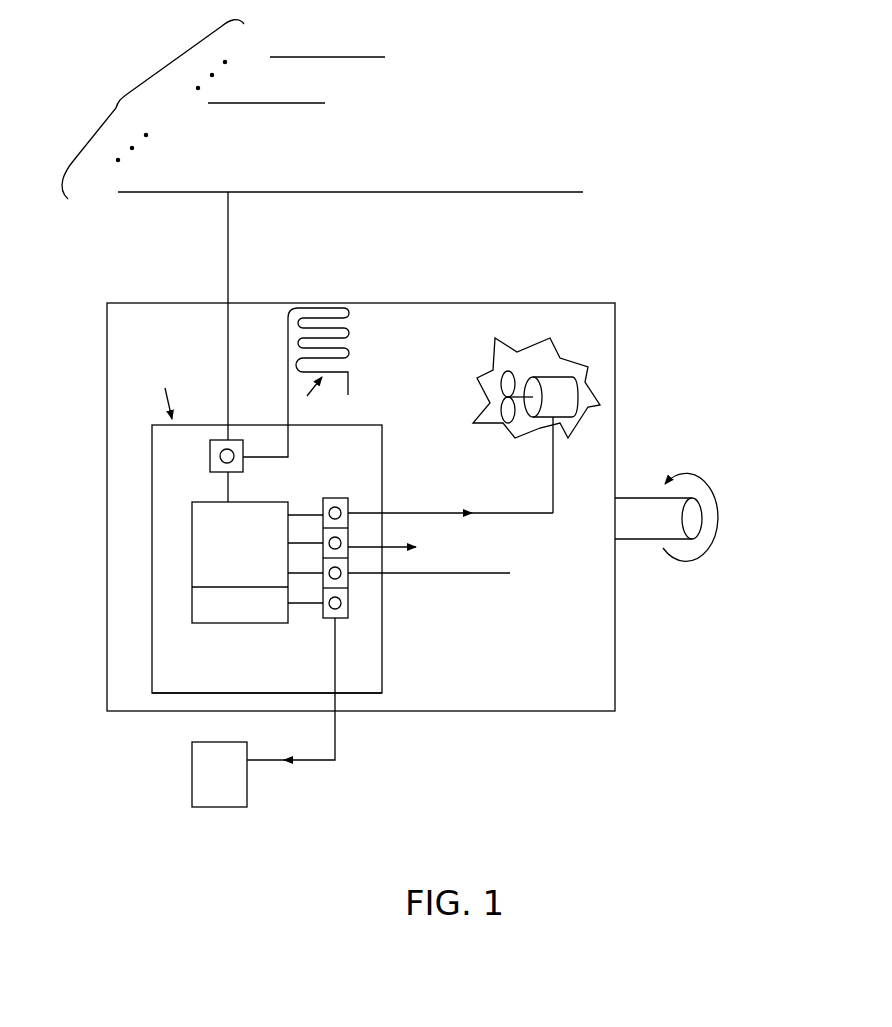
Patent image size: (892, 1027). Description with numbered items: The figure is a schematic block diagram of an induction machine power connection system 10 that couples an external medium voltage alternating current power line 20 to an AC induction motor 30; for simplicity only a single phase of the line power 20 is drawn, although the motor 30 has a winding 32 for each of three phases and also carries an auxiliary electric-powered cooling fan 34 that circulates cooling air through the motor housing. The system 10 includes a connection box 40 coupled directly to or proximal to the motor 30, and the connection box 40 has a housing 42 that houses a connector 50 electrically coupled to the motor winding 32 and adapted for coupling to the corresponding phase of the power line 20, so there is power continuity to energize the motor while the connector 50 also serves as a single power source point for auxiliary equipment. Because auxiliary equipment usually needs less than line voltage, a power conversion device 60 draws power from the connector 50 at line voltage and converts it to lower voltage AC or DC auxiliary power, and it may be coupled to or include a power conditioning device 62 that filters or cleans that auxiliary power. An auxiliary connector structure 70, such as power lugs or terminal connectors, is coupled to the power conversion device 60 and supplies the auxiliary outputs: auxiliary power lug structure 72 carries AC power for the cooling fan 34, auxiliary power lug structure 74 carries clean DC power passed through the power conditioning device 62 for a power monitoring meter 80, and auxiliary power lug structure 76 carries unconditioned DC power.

The induction machine power connection system 10 is at (604, 735).
The AC power line 20 is at (367, 122).
The AC induction motor 30 is at (618, 615).
The winding 32 is at (349, 312).
The cooling fan 34 is at (588, 405).
The connection box 40 is at (148, 537).
The housing 42 is at (152, 673).
The connector 50 is at (210, 456).
The power conversion device 60 is at (184, 562).
The power conditioning device 62 is at (251, 618).
The auxiliary connector structure 70 is at (357, 532).
The auxiliary power lug structure 72 is at (350, 508).
The auxiliary power lug structure 74 is at (348, 607).
The auxiliary power lug structure 76 is at (348, 566).
The power monitoring meter 80 is at (216, 787).